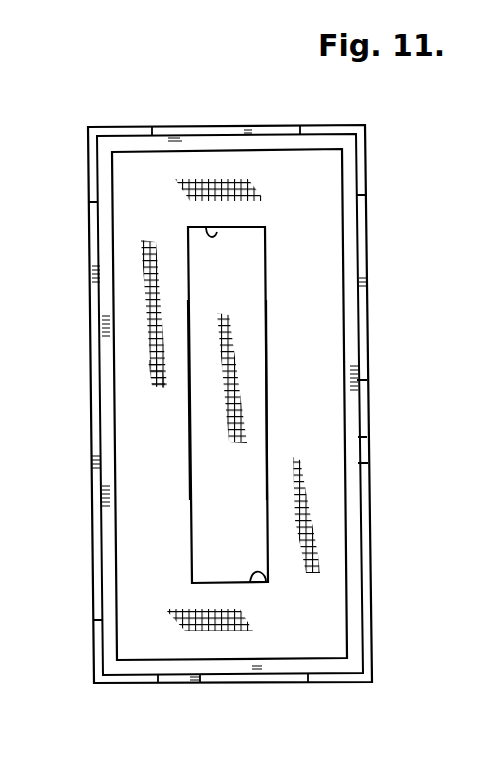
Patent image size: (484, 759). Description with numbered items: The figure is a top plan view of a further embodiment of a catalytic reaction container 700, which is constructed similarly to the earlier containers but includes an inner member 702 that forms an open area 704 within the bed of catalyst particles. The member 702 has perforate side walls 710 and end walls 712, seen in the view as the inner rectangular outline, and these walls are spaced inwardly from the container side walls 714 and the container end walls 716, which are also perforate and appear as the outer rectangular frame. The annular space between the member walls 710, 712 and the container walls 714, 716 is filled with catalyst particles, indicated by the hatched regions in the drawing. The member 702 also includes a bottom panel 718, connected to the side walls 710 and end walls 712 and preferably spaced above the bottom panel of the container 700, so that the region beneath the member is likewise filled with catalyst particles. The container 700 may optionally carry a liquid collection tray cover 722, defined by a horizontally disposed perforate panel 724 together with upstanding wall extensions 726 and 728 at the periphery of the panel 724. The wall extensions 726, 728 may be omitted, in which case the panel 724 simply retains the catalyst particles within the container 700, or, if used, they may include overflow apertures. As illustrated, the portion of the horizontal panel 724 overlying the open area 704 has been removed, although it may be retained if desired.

The catalytic reaction container 700 is at (203, 100).
The member 702 is at (254, 256).
The area 704 is at (244, 310).
The perforate side walls 710 is at (262, 402).
The end walls 712 is at (217, 226).
The container side walls 714 is at (362, 437).
The container end walls 716 is at (218, 128).
The bottom panel 718 is at (254, 546).
The liquid collection tray cover 722 is at (122, 376).
The horizontally disposed perforate panel 724 is at (120, 288).
The upstanding wall extension 726 is at (123, 143).
The upstanding wall extension 728 is at (103, 191).